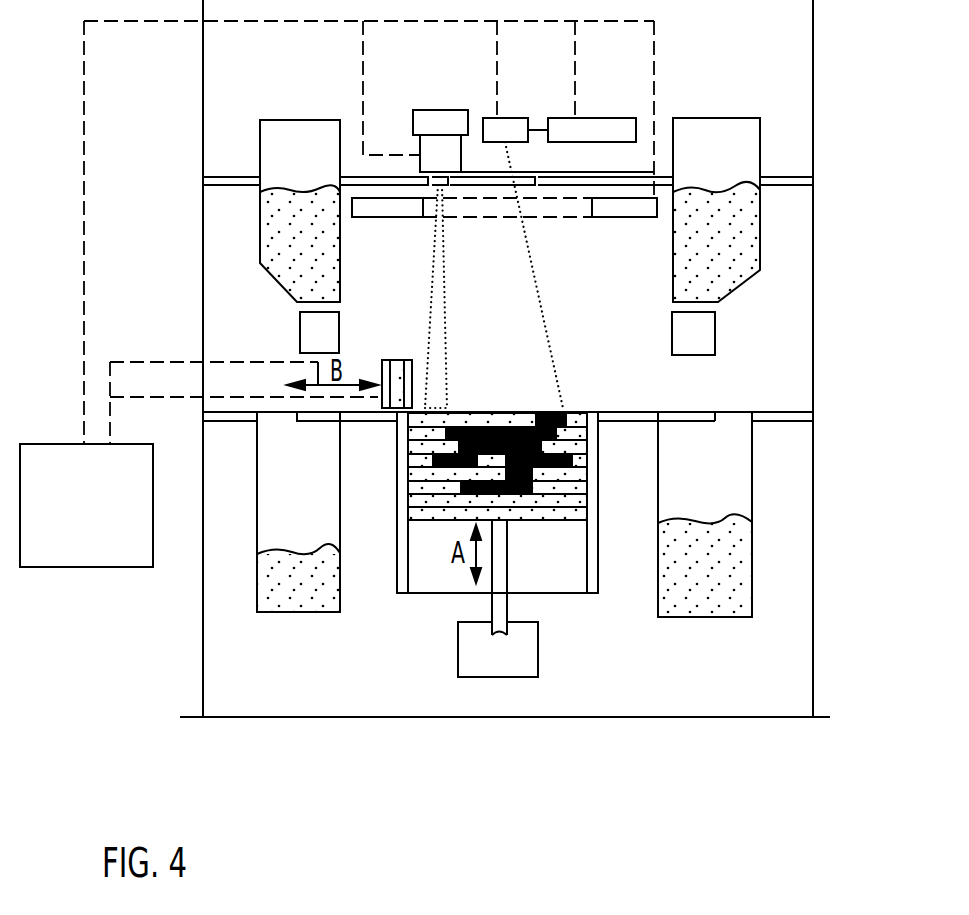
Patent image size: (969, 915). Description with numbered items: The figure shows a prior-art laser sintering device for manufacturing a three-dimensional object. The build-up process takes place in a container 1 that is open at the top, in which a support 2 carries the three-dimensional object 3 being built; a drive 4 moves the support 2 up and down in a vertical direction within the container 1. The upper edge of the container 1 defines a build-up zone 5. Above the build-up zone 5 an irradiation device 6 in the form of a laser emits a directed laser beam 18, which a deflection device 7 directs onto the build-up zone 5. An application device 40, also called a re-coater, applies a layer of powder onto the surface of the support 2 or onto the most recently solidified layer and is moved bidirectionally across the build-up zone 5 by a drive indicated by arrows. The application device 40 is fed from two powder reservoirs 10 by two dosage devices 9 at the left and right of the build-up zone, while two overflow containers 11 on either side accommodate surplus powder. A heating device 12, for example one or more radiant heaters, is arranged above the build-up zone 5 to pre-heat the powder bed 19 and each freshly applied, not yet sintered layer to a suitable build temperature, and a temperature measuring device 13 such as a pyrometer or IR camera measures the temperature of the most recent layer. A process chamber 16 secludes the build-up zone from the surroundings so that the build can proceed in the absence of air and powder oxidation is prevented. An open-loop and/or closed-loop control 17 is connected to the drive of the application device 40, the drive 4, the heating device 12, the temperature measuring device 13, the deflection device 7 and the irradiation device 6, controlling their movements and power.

The container 1 is at (388, 498).
The support 2 is at (537, 508).
The three-dimensional object 3 is at (488, 418).
The drive 4 is at (525, 653).
The build-up zone 5 is at (583, 412).
The irradiation device 6 is at (600, 135).
The deflection device 7 is at (510, 128).
The dosage device 9 is at (300, 333).
The powder reservoir 10 is at (294, 145).
The overflow container 11 is at (280, 612).
The heating device 12 is at (395, 217).
The temperature measuring device 13 is at (455, 150).
The process chamber 16 is at (813, 300).
The open-loop control and/or closed-loop control 17 is at (80, 548).
The laser beam 18 is at (543, 313).
The powder bed 19 is at (583, 420).
The application device 40 is at (396, 360).